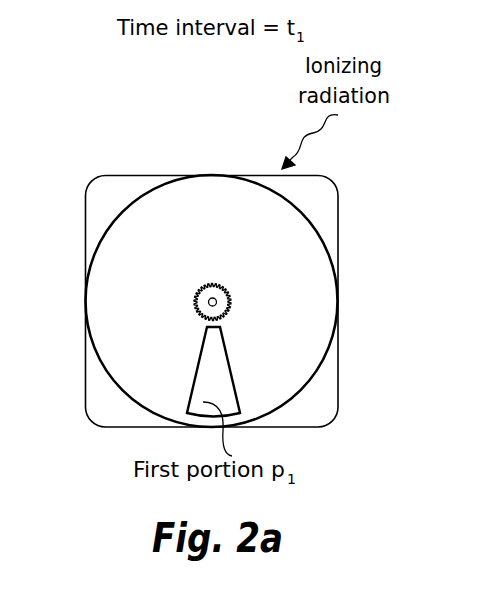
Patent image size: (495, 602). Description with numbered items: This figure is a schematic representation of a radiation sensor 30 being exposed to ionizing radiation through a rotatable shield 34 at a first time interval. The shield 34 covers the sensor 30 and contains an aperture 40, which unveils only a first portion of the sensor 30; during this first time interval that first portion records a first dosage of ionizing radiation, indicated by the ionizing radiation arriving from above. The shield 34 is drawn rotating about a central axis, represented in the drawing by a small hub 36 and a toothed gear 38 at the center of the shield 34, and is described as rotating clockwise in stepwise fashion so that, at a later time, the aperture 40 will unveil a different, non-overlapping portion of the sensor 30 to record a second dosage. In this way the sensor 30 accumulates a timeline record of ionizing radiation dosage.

The sensor 30 is at (177, 176).
The rotatable shield 34 is at (322, 363).
The axis of rotation 36 is at (208, 302).
The gear 38 is at (197, 291).
The aperture 40 is at (190, 381).